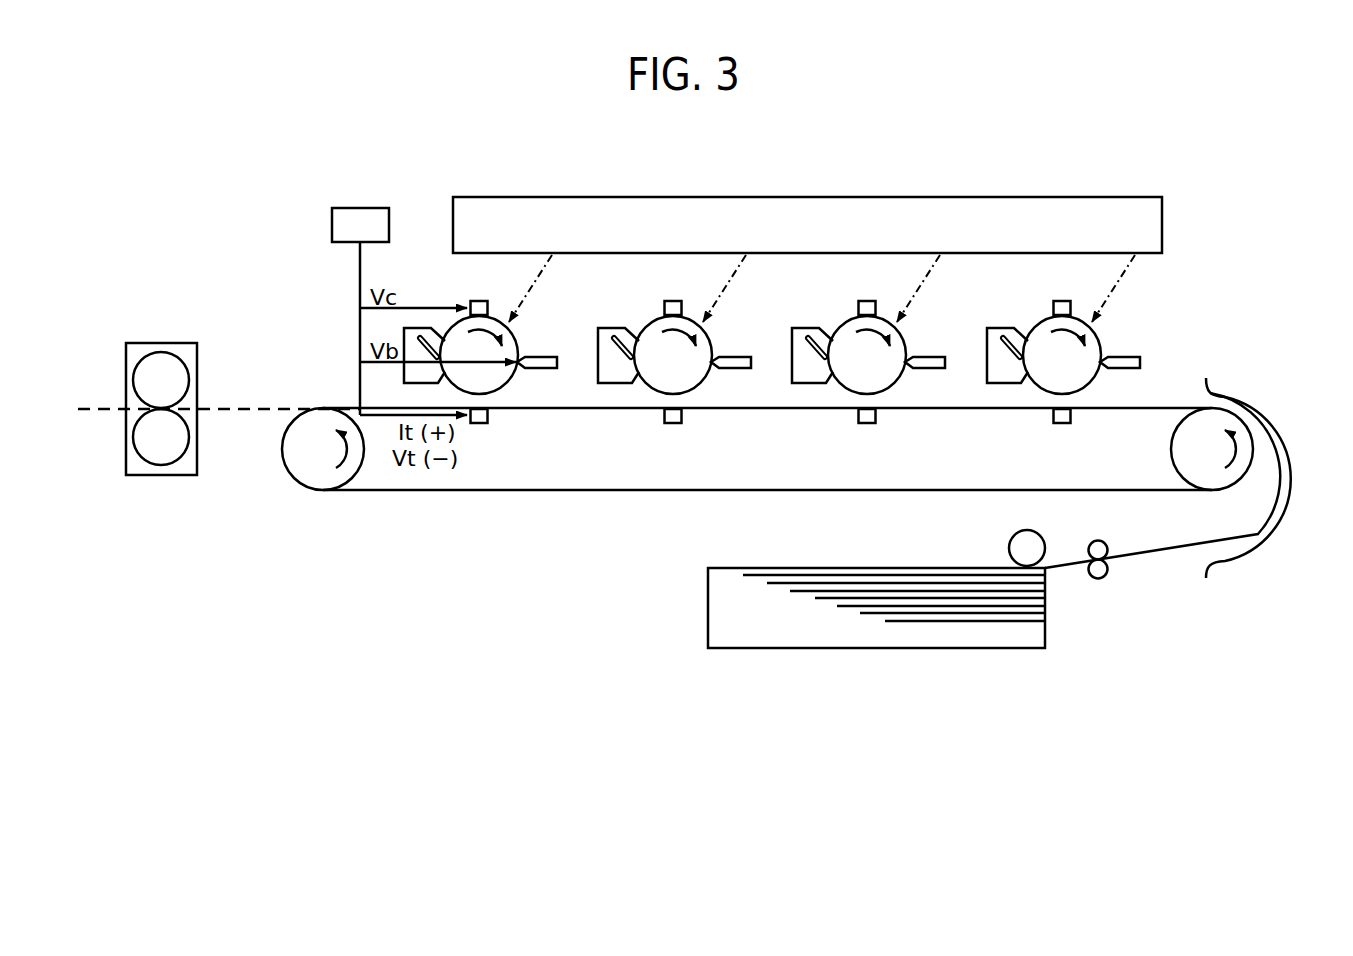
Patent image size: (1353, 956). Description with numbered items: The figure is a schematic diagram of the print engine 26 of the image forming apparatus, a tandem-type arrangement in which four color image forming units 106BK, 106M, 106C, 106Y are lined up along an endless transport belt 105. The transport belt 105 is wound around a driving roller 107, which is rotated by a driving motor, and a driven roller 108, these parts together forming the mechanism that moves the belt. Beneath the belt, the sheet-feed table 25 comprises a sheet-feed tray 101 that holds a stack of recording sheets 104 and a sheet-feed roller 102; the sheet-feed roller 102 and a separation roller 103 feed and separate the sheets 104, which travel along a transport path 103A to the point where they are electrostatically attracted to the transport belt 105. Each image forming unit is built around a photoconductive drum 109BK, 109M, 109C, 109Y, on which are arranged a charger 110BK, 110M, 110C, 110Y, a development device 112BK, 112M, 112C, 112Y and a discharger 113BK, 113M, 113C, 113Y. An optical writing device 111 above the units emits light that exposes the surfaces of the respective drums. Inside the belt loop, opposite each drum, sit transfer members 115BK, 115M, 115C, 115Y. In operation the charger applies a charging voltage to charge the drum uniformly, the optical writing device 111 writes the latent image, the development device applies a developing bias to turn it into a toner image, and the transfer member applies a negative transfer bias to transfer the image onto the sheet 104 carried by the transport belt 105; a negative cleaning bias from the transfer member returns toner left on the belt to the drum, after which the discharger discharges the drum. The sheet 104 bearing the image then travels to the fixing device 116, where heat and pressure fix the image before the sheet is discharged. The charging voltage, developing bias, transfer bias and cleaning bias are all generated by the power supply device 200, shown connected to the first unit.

The sheet-feed table 25 is at (694, 613).
The print engine 26 is at (289, 197).
The power supply device 200 is at (383, 197).
The optical writing device 111 is at (1095, 197).
The fixing device 116 is at (161, 352).
The transport belt 105 is at (566, 492).
The driving roller 107 is at (297, 470).
The driven roller 108 is at (1172, 454).
The sheet-feed tray 101 is at (858, 566).
The sheet-feed roller 102 is at (1010, 548).
The separation roller 103 is at (1100, 580).
The transport path 103A is at (1263, 535).
The recording media (sheets) 104 is at (912, 600).
The image forming unit 106Y is at (442, 302).
The image forming unit 106C is at (649, 312).
The image forming unit 106M is at (843, 312).
The image forming unit 106BK is at (1038, 312).
The photoconductive drum 109Y is at (511, 380).
The photoconductive drum 109C is at (705, 380).
The photoconductive drum 109M is at (899, 380).
The photoconductive drum 109BK is at (1094, 380).
The charger 110Y is at (481, 301).
The charger 110C is at (688, 288).
The charger 110M is at (882, 288).
The charger 110BK is at (1077, 288).
The development device 112Y is at (540, 357).
The development device 112C is at (745, 345).
The development device 112M is at (939, 345).
The development device 112BK is at (1134, 345).
The discharger 113Y is at (404, 330).
The discharger 113C is at (601, 328).
The discharger 113M is at (795, 328).
The discharger 113BK is at (990, 328).
The transfer member 115Y is at (482, 423).
The transfer member 115C is at (676, 423).
The transfer member 115M is at (870, 423).
The transfer member 115BK is at (1065, 423).